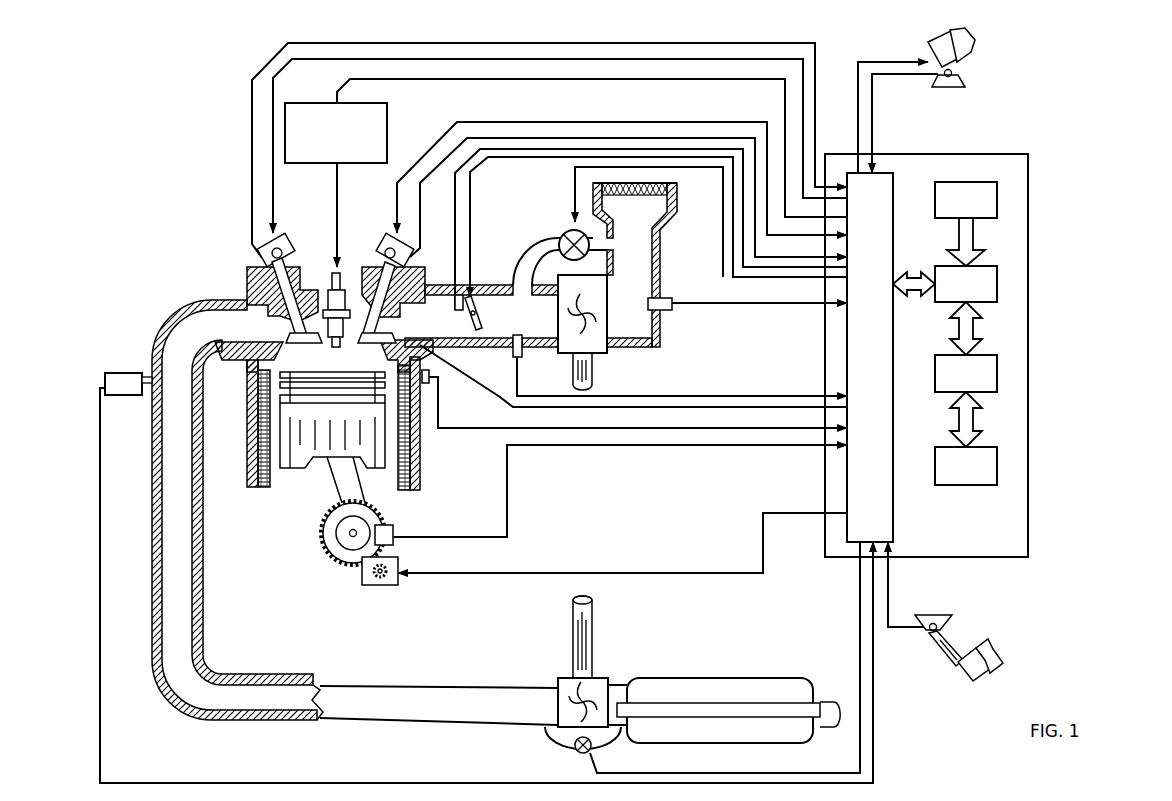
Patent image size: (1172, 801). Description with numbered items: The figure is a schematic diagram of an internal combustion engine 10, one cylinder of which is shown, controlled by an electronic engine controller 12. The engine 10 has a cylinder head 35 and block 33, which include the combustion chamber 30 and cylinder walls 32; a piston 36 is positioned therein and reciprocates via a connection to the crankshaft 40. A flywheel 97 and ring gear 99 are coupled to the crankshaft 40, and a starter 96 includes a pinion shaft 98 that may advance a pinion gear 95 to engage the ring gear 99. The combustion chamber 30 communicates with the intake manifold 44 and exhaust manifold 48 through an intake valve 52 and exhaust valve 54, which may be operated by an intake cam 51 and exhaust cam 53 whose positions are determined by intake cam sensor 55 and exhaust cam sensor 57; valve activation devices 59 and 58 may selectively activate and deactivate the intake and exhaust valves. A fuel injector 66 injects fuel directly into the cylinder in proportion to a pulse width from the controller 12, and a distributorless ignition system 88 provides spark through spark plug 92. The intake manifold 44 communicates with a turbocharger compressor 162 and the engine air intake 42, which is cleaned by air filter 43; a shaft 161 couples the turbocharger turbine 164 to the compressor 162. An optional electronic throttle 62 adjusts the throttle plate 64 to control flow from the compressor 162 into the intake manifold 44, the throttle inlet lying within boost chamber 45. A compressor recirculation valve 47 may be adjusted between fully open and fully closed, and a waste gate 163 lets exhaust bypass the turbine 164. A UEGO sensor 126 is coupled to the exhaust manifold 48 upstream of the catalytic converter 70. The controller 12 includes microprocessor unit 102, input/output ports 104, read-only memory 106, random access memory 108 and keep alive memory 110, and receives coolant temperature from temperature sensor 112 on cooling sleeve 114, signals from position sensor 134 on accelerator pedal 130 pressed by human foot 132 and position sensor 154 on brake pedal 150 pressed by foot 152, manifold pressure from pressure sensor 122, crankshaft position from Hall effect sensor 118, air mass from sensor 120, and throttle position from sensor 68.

The internal combustion engine 10 is at (192, 228).
The electronic engine controller 12 is at (1028, 154).
The combustion chamber 30 is at (335, 355).
The cylinder walls 32 is at (287, 480).
The block 33 is at (244, 392).
The cylinder head 35 is at (245, 267).
The piston 36 is at (322, 445).
The crankshaft 40 is at (345, 553).
The engine air intake 42 is at (522, 197).
The air filter 43 is at (653, 197).
The intake manifold 44 is at (516, 284).
The boost chamber 45 is at (528, 328).
The compressor recirculation valve 47 is at (567, 230).
The exhaust manifold 48 is at (354, 512).
The intake cam 51 is at (390, 238).
The intake valve 52 is at (375, 327).
The exhaust cam 53 is at (281, 253).
The exhaust valve 54 is at (247, 303).
The intake cam sensor 55 is at (404, 256).
The exhaust cam sensor 57 is at (264, 255).
The valve activation device 58 is at (291, 253).
The valve activation device 59 is at (388, 258).
The electronic throttle 62 is at (476, 313).
The throttle plate 64 is at (470, 327).
The fuel injector 66 is at (432, 382).
The throttle position sensor 68 is at (448, 297).
The catalytic converter 70 is at (660, 678).
The distributorless ignition system 88 is at (297, 103).
The spark plug 92 is at (340, 272).
The pinion gear 95 is at (396, 585).
The starter 96 is at (397, 585).
The flywheel 97 is at (327, 537).
The pinion shaft 98 is at (378, 578).
The ring gear 99 is at (350, 574).
The microprocessor unit 102 is at (997, 280).
The input/output ports 104 is at (895, 180).
The read-only memory 106 is at (997, 197).
The random access memory 108 is at (997, 370).
The keep alive memory 110 is at (997, 460).
The temperature sensor 112 is at (456, 417).
The cooling sleeve 114 is at (412, 447).
The Hall effect sensor 118 is at (393, 528).
The air mass sensor 120 is at (670, 297).
The pressure sensor 122 is at (513, 353).
The Universal Exhaust Gas Oxygen sensor 126 is at (105, 377).
The accelerator pedal 130 is at (930, 57).
The human foot 132 is at (977, 37).
The position sensor 134 is at (965, 80).
The brake pedal 150 is at (957, 665).
The foot 152 is at (990, 640).
The position sensor 154 is at (925, 628).
The shaft 161 is at (572, 372).
The turbocharger compressor 162 is at (593, 337).
The waste gate 163 is at (577, 757).
The turbocharger turbine 164 is at (560, 675).